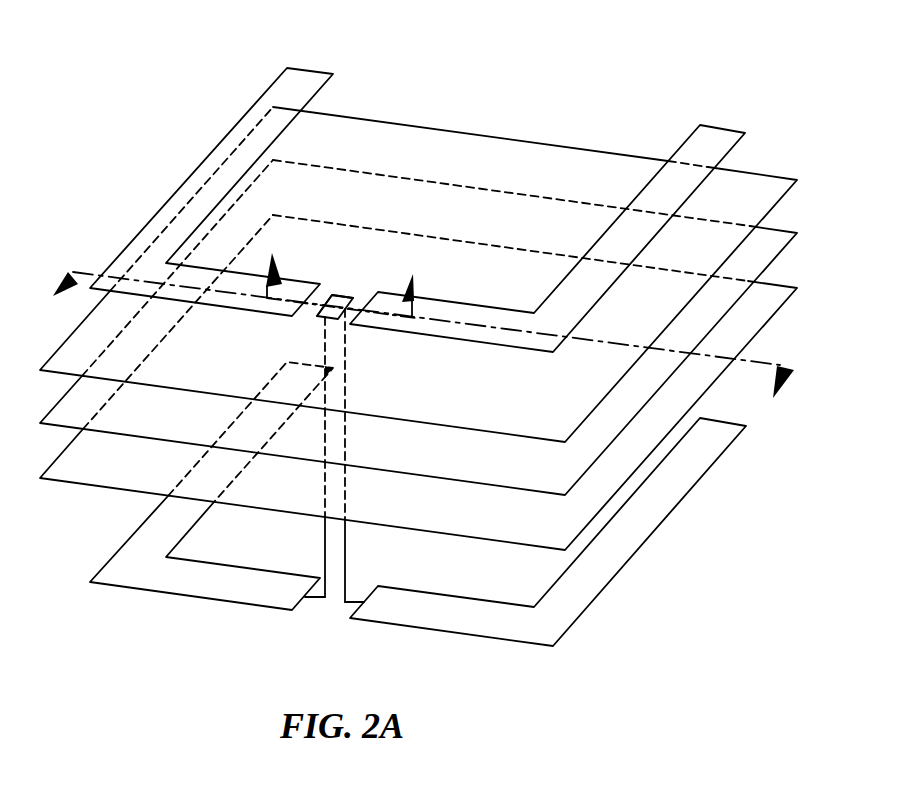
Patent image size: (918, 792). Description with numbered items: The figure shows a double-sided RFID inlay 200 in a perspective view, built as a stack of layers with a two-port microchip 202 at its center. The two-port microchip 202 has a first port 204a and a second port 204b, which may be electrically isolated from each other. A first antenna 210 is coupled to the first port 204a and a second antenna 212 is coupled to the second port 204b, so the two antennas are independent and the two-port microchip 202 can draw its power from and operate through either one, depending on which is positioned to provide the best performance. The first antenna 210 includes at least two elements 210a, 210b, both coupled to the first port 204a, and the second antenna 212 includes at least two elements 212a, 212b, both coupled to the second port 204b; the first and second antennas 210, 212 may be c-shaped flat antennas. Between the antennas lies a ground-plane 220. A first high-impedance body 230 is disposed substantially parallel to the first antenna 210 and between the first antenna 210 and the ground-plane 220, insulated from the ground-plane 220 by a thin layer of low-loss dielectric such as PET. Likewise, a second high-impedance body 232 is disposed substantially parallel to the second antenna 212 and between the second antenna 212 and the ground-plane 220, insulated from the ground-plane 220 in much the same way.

The RFID inlay 200 is at (200, 42).
The two-port microchip 202 is at (331, 293).
The first port 204a is at (321, 297).
The second port 204b is at (326, 319).
The first antenna 210 is at (175, 198).
The element of first antenna 210a is at (302, 82).
The element of first antenna 210b is at (713, 134).
The second antenna 212 is at (104, 590).
The element of second antenna 212a is at (178, 598).
The element of second antenna 212b is at (470, 638).
The ground-plane 220 is at (781, 230).
The first high-impedance body 230 is at (781, 176).
The second high-impedance body 232 is at (781, 288).